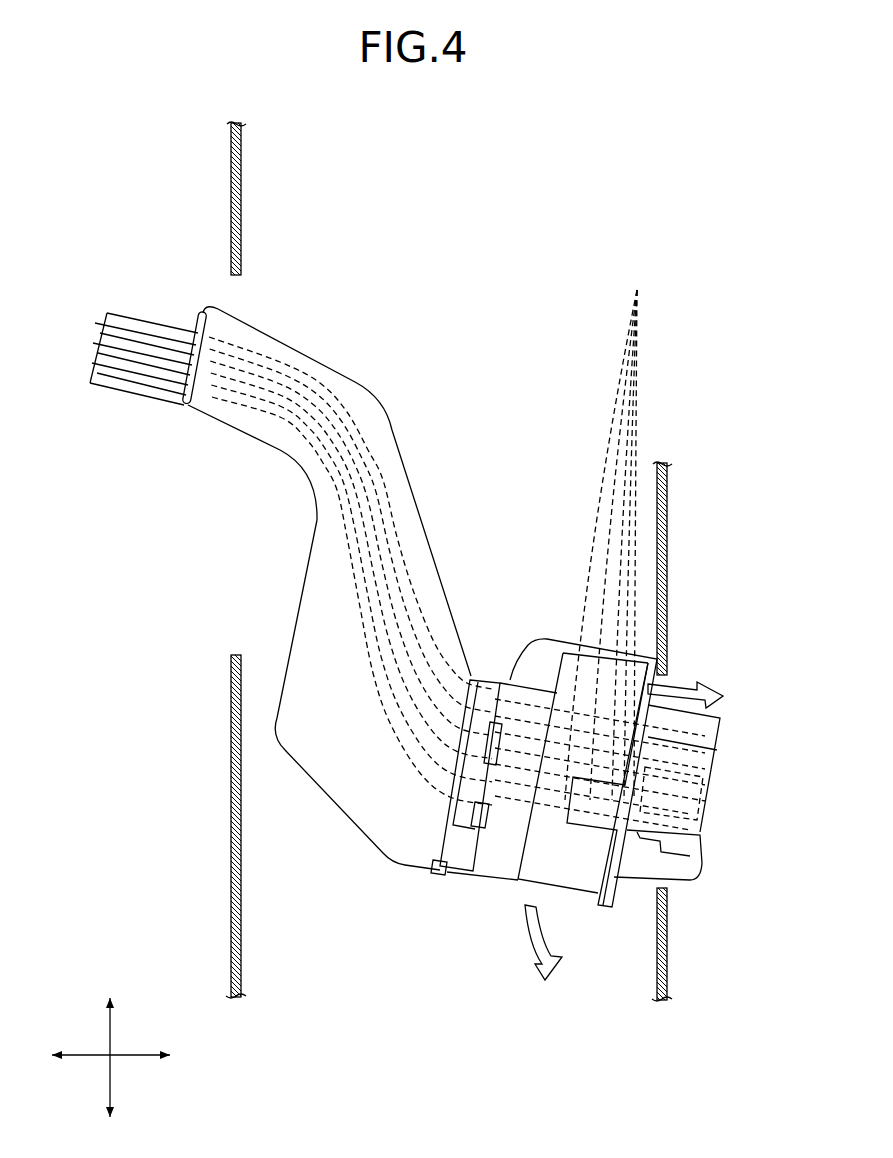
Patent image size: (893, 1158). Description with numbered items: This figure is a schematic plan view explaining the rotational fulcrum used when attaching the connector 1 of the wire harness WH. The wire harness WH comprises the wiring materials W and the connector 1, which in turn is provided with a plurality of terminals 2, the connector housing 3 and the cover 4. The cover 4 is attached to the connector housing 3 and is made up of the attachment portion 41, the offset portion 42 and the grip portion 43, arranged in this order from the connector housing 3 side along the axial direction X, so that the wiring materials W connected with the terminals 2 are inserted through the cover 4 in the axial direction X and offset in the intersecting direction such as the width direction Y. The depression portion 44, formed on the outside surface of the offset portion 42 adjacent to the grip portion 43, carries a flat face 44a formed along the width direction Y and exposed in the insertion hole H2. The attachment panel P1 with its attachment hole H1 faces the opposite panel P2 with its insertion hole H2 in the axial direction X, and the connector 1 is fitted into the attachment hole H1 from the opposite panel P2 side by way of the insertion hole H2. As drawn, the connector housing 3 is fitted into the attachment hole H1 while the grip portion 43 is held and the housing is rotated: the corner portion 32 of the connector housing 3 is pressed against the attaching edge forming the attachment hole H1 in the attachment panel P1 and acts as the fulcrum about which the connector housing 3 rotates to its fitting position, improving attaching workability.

The wire harness WH is at (325, 221).
The wiring materials W is at (160, 321).
The connector 1 is at (447, 261).
The terminals 2 is at (604, 532).
The connector housing 3 is at (625, 586).
The corner portion 32 is at (666, 665).
The cover 4 is at (358, 303).
The attachment portion 41 is at (488, 668).
The offset portion 42 is at (435, 535).
The grip portion 43 is at (279, 336).
The depression portion 44 is at (317, 586).
The flat face 44a is at (287, 667).
The attachment panel P1 is at (670, 503).
The opposite panel P2 is at (243, 166).
The attachment hole H1 is at (663, 887).
The insertion hole H2 is at (236, 655).
The axial direction X is at (140, 1058).
The width direction Y is at (112, 1028).